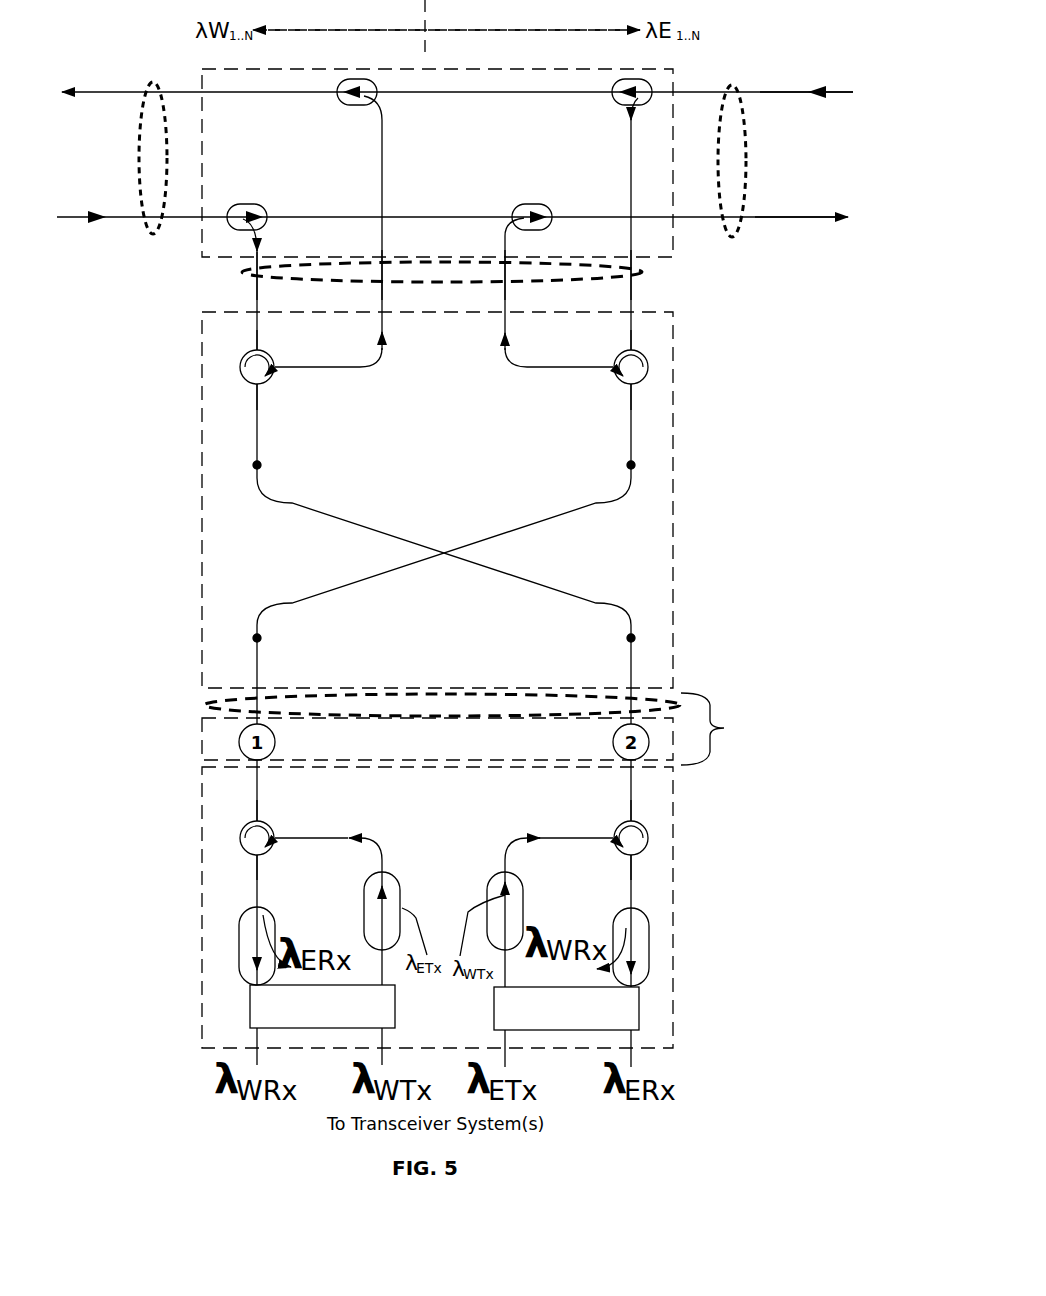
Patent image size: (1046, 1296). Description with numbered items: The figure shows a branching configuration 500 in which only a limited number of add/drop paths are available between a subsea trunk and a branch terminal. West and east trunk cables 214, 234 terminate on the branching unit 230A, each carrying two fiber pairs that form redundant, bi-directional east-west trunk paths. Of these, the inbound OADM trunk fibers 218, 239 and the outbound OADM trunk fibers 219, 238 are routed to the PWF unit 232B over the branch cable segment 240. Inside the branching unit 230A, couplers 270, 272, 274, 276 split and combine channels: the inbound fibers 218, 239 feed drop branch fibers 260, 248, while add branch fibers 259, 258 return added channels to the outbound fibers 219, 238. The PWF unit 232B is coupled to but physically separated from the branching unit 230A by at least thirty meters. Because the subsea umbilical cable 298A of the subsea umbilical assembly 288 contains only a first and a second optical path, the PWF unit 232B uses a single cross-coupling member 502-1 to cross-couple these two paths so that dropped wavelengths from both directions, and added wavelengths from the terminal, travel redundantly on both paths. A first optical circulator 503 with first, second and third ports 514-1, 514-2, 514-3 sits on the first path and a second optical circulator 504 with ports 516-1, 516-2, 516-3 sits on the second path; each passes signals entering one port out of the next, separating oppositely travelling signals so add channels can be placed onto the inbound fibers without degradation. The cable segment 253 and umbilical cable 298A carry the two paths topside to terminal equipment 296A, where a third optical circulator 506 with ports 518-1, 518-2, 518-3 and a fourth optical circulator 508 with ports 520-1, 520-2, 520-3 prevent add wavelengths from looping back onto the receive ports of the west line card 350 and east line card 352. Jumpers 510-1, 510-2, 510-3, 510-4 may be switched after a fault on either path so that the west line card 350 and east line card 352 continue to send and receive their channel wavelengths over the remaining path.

The branching configuration 500 is at (116, 40).
The trunk cable 214 is at (153, 82).
The outbound OADM trunk fiber 219 is at (122, 93).
The inbound OADM trunk fiber 218 is at (136, 219).
The inbound OADM trunk fiber 239 is at (762, 93).
The outbound OADM trunk fiber 238 is at (756, 219).
The trunk cable 234 is at (732, 86).
The branching unit 230A is at (336, 69).
The coupler 272 is at (376, 98).
The coupler 276 is at (644, 100).
The coupler 270 is at (262, 204).
The coupler 274 is at (520, 211).
The branch cable segment 240 is at (243, 271).
The drop branch fiber 260 is at (257, 286).
The add branch fiber 259 is at (382, 286).
The add branch fiber 258 is at (505, 291).
The drop branch fiber 248 is at (631, 300).
The PWF unit 232B is at (202, 540).
The first optical circulator 503 is at (240, 367).
The first port 514-1 is at (253, 349).
The second port 514-2 is at (257, 386).
The third port 514-3 is at (282, 366).
The second optical circulator 504 is at (650, 368).
The first port 516-1 is at (623, 350).
The second port 516-2 is at (633, 386).
The third port 516-3 is at (616, 378).
The cross-coupling member 502-1 is at (442, 542).
The cable segment 253 is at (204, 705).
The subsea umbilical cable 298A is at (202, 718).
The subsea umbilical assembly 288 is at (741, 722).
The terminal equipment 296A is at (202, 780).
The third optical circulator 506 is at (240, 838).
The first port 518-1 is at (279, 848).
The second port 518-2 is at (253, 820).
The third port 518-3 is at (257, 856).
The fourth optical circulator 508 is at (650, 838).
The first port 520-1 is at (616, 847).
The second port 520-2 is at (623, 822).
The third port 520-3 is at (632, 856).
The jumper 510-1 is at (240, 915).
The jumper 510-2 is at (396, 874).
The jumper 510-3 is at (500, 870).
The jumper 510-4 is at (648, 923).
The west line card 350 is at (322, 1006).
The east line card 352 is at (566, 1008).